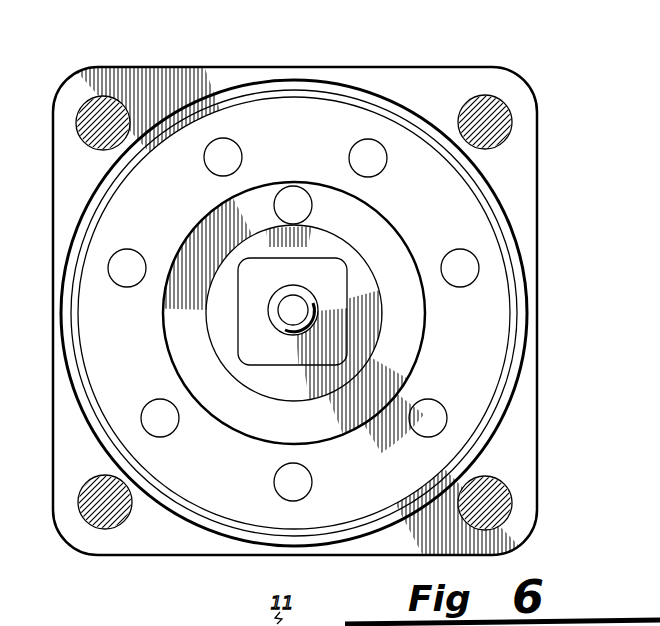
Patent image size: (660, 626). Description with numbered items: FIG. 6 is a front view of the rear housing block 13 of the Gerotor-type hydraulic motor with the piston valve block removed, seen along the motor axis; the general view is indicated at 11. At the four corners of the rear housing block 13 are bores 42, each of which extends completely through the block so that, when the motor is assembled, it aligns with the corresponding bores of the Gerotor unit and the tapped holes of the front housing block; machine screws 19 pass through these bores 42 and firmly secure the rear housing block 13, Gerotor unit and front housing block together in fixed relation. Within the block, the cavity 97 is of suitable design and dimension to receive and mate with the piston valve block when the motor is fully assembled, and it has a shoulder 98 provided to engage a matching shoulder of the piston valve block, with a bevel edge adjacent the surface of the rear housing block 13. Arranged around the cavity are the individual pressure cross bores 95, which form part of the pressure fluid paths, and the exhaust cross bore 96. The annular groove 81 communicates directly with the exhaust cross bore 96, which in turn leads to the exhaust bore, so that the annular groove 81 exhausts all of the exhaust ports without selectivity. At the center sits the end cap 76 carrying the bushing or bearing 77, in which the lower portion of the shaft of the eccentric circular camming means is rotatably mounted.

The hydraulic device assembly 11 is at (525, 84).
The rear housing block 13 is at (437, 101).
The machine screws 19 is at (87, 112).
The bores 42 is at (86, 128).
The end cap 76 is at (344, 262).
The bushing or bearing 77 is at (278, 324).
The annular groove 81 is at (306, 434).
The pressure cross bores 95 is at (210, 169).
The exhaust cross bore 96 is at (286, 186).
The cavity 97 is at (507, 313).
The shoulder 98 is at (512, 348).